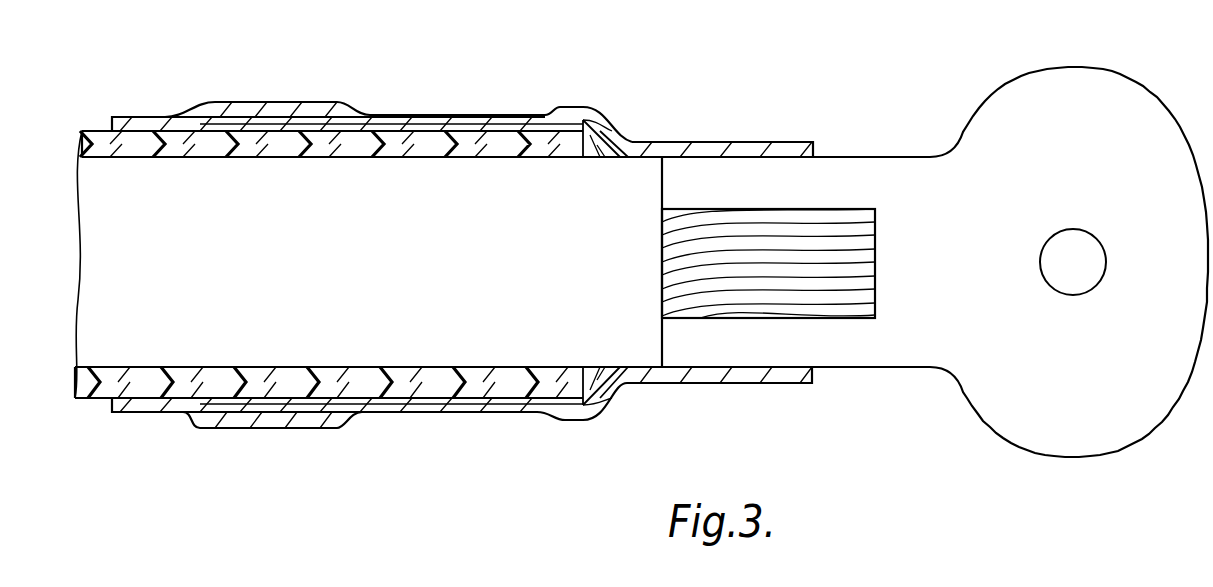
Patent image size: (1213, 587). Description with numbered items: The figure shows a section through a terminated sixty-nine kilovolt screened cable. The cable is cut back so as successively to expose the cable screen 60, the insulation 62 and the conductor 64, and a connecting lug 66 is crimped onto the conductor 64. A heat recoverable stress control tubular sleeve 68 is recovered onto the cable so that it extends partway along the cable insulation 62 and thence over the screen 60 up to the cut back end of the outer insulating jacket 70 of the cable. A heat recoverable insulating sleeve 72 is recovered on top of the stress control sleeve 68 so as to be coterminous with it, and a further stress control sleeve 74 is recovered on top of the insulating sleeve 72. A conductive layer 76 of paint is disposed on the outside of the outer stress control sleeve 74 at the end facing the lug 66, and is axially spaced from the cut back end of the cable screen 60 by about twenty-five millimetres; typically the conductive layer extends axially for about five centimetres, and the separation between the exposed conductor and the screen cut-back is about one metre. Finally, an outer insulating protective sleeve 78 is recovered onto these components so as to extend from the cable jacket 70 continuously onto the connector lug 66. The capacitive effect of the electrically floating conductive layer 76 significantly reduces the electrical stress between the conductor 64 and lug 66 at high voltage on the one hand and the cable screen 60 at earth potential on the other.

The cable screen 60 is at (207, 152).
The insulation 62 is at (431, 272).
The conductor 64 is at (866, 270).
The connecting lug 66 is at (1018, 405).
The heat recoverable stress control tubular sleeve 68 is at (437, 378).
The outer insulating jacket 70 is at (90, 392).
The heat recoverable insulating sleeve 72 is at (229, 403).
The further stress control sleeve 74 is at (300, 413).
The conductive layer 76 is at (572, 407).
The outer insulating protective sleeve 78 is at (430, 407).